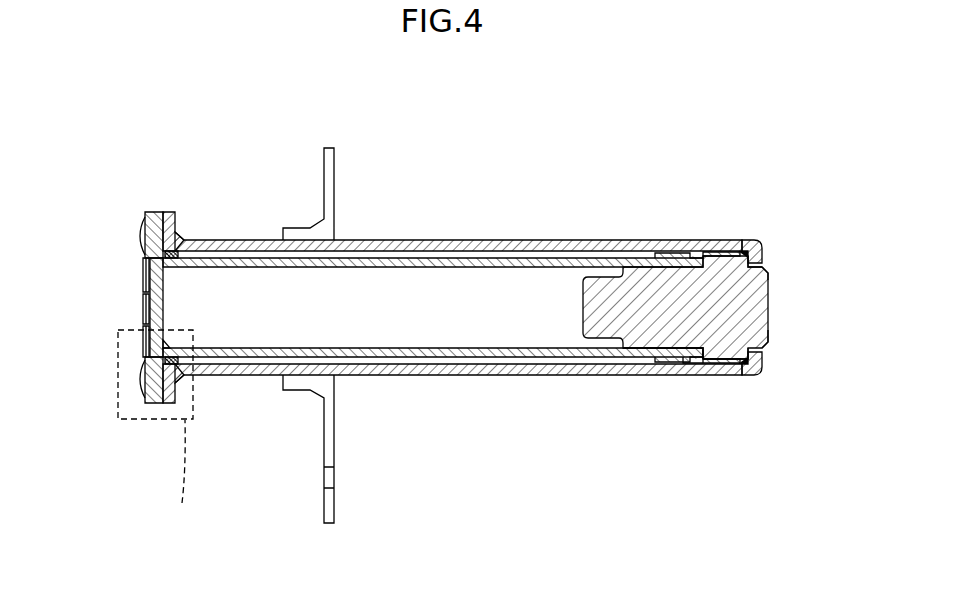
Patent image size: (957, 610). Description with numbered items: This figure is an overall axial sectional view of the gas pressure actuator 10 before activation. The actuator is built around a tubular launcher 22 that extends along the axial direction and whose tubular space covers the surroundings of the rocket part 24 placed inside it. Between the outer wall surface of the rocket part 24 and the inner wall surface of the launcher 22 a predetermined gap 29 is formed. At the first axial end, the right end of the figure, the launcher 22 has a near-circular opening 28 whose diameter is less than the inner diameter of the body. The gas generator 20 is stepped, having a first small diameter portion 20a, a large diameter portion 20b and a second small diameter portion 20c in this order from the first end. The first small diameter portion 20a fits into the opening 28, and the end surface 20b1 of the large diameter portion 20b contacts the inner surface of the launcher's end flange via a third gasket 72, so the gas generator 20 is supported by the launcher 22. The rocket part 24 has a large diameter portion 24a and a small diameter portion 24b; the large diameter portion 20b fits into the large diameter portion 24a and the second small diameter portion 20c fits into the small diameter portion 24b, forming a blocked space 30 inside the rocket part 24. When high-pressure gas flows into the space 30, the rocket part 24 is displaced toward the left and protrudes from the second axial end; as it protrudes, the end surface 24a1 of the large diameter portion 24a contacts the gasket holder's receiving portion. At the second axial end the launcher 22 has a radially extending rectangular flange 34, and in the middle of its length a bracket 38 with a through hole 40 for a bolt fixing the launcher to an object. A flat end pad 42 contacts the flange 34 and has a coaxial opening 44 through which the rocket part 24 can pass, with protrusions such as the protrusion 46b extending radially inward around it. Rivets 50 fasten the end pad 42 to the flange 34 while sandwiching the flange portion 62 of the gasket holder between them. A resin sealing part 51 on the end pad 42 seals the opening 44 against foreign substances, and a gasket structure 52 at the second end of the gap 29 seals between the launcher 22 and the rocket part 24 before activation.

The gas pressure actuator 10 is at (467, 146).
The gas generator 20 is at (772, 305).
The first small diameter portion 20a is at (769, 340).
The large diameter portion 20b is at (723, 378).
The end surface 20b1 is at (775, 258).
The second small diameter portion 20c is at (655, 378).
The launcher 22 is at (447, 377).
The rocket part 24 is at (737, 177).
The large diameter portion 24a is at (715, 253).
The end surface 24a1 is at (682, 378).
The small diameter portion 24b is at (655, 255).
The opening 28 is at (786, 258).
The gap 29 is at (258, 362).
The space 30 is at (382, 290).
The flange 34 is at (176, 392).
The bracket 38 is at (335, 426).
The through hole 40 is at (335, 479).
The end pad 42 is at (163, 405).
The opening 44 is at (143, 352).
The protrusion 46b is at (143, 308).
The rivet 50 is at (140, 233).
The sealing part 51 is at (143, 275).
The gasket structure 52 is at (182, 343).
The flange portion 62 is at (165, 211).
The third gasket 72 is at (746, 251).